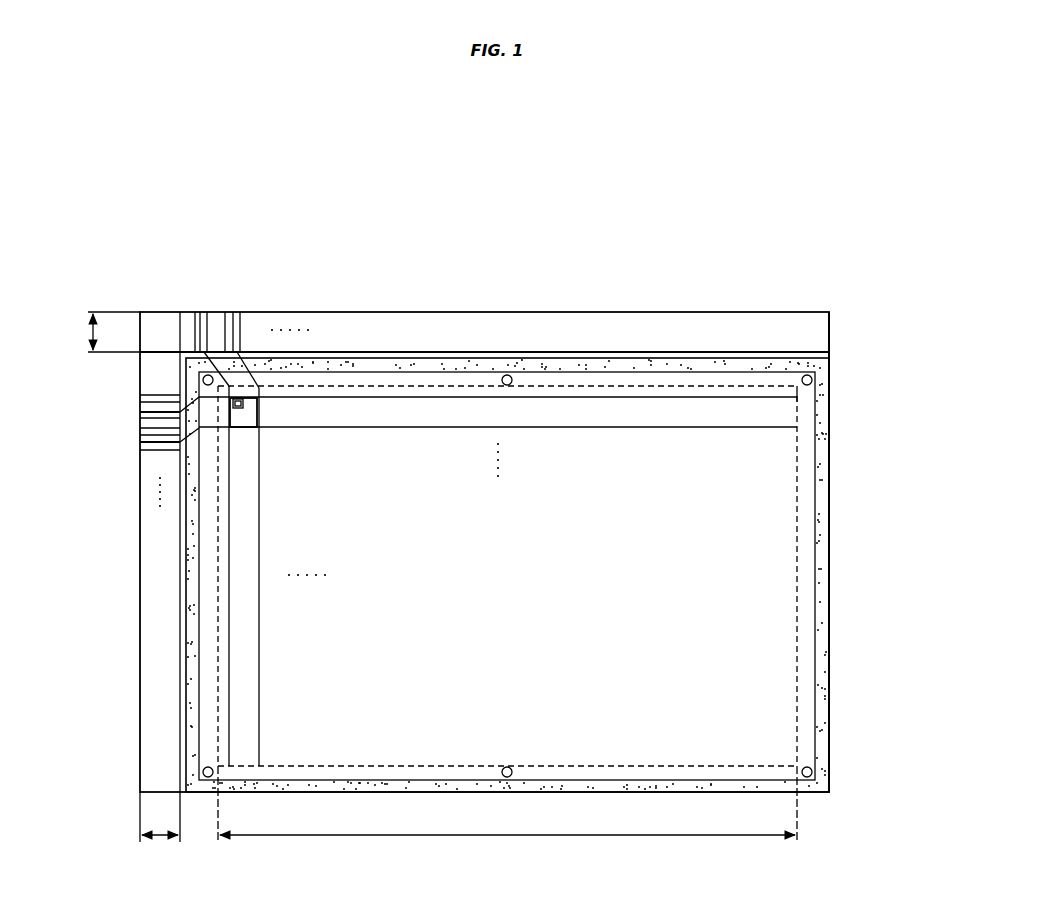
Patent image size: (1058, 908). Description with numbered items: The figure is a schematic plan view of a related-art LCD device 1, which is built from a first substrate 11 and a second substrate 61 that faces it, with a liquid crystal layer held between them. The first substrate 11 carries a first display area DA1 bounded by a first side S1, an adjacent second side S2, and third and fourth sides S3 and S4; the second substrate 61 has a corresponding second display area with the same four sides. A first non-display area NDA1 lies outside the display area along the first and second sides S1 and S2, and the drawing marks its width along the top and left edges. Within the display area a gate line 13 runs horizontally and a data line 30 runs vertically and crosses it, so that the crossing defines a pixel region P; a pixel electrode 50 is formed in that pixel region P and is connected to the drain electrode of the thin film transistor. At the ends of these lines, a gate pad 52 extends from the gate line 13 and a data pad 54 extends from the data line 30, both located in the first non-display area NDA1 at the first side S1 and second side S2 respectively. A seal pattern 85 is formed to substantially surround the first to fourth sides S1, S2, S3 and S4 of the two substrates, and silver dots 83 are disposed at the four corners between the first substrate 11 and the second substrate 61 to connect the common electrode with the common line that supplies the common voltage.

The LCD device 1 is at (826, 279).
The first substrate 11 is at (663, 311).
The gate line 13 is at (575, 428).
The data line 30 is at (260, 530).
The pixel electrode 50 is at (259, 412).
The gate pad 52 is at (150, 415).
The data pad 54 is at (201, 322).
The second substrate 61 is at (575, 356).
The silver dots 83 is at (811, 377).
The seal pattern 85 is at (829, 520).
The pixel region P is at (258, 387).
The first side S1 is at (462, 384).
The second side S2 is at (218, 623).
The third side S3 is at (462, 773).
The fourth side S4 is at (797, 622).
The first non-display area NDA1 is at (113, 587).
The first display area DA1 is at (507, 804).